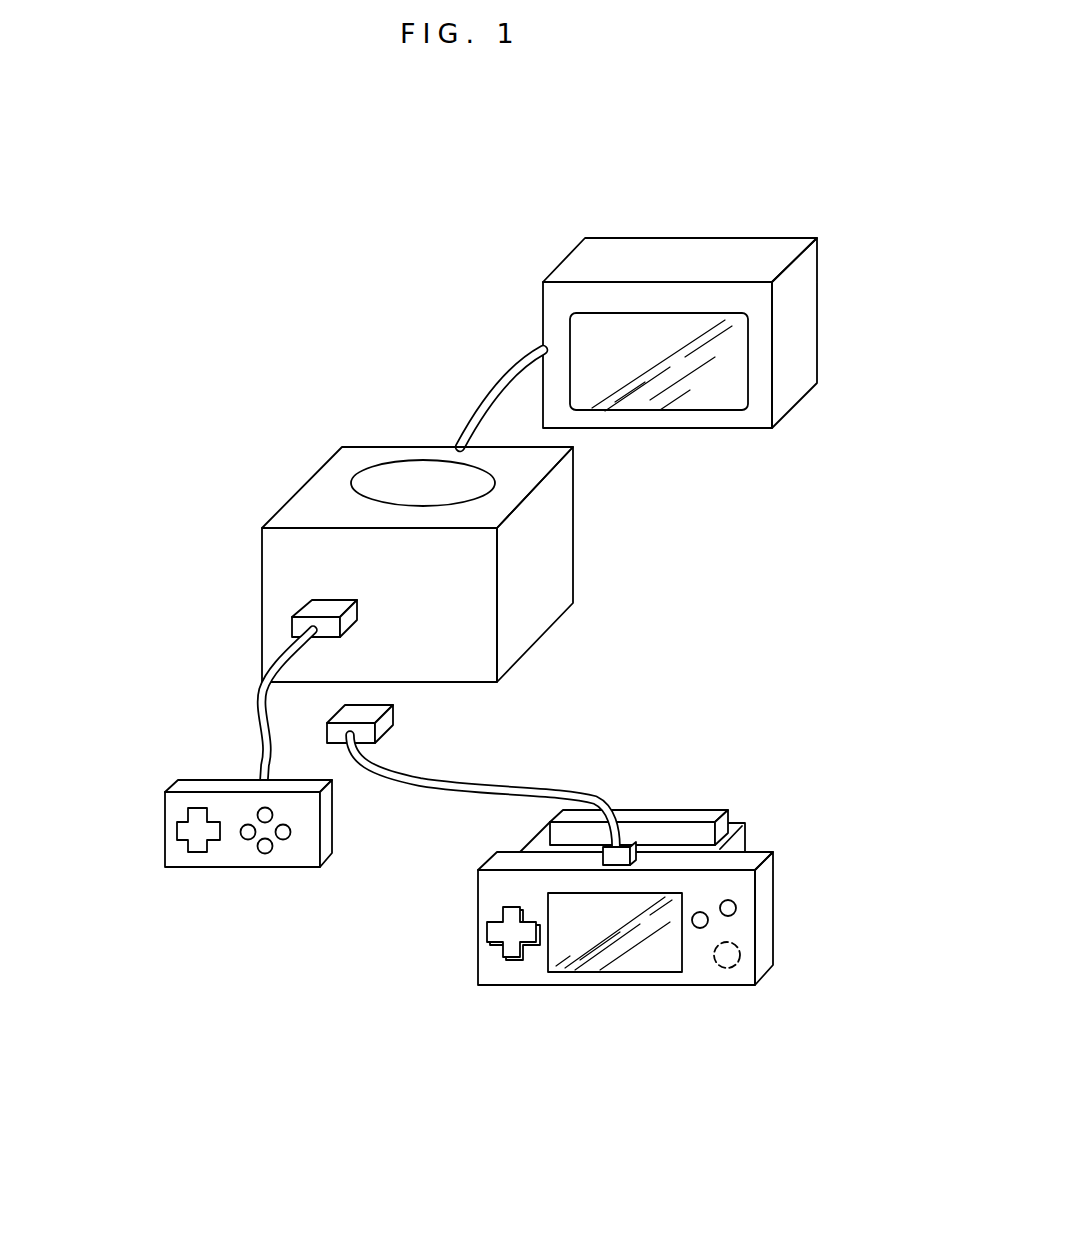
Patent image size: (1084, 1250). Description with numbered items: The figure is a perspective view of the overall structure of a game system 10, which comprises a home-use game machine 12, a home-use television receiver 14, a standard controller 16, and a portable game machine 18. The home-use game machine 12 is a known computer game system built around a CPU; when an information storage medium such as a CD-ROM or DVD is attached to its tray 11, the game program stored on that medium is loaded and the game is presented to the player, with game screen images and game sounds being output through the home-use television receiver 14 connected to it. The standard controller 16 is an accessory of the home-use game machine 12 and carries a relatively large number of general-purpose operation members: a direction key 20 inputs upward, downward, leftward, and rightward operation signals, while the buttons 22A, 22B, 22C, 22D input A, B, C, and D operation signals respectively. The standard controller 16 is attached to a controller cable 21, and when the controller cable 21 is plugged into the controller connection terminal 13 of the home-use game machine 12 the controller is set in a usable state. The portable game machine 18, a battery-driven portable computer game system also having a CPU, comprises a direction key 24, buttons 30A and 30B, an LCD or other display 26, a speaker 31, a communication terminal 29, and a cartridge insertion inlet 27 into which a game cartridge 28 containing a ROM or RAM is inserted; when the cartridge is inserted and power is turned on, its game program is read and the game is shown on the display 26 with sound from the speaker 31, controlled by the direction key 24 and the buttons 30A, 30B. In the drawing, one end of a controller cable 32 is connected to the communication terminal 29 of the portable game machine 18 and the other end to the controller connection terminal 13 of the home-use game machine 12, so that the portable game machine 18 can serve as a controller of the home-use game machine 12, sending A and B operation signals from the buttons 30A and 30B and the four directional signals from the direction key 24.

The game system 10 is at (669, 553).
The tray 11 is at (418, 461).
The home-use game machine 12 is at (310, 478).
The controller connection terminal 13 is at (296, 596).
The home-use television receiver 14 is at (725, 234).
The standard controller 16 is at (147, 868).
The portable game machine 18 is at (461, 974).
The direction key 20 is at (199, 807).
The controller cable 21 is at (260, 697).
The button 22A is at (273, 810).
The button 22B is at (246, 841).
The button 22C is at (265, 854).
The button 22D is at (292, 832).
The direction key 24 is at (508, 958).
The display 26 is at (615, 972).
The cartridge insertion inlet 27 is at (744, 832).
The game cartridge 28 is at (667, 809).
The communication terminal 29 is at (620, 845).
The button 30A is at (742, 907).
The button 30B is at (699, 930).
The speaker 31 is at (744, 965).
The controller cable 32 is at (402, 770).